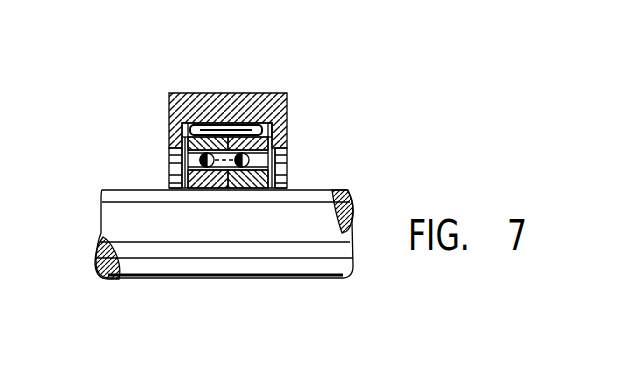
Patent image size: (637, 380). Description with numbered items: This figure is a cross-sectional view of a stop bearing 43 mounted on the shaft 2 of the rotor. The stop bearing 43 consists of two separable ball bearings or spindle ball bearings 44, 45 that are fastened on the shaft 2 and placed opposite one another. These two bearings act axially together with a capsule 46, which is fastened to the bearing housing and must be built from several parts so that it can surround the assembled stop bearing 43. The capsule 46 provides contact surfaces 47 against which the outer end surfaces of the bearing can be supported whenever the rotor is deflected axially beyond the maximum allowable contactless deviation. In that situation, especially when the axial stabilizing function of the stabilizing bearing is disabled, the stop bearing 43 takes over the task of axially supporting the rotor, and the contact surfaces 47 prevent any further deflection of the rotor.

The shaft 2 is at (304, 190).
The stop bearing 43 is at (169, 131).
The separable ball bearing 44 is at (200, 189).
The separable ball bearing 45 is at (244, 189).
The capsule 46 is at (283, 118).
The contact surfaces 47 is at (262, 126).